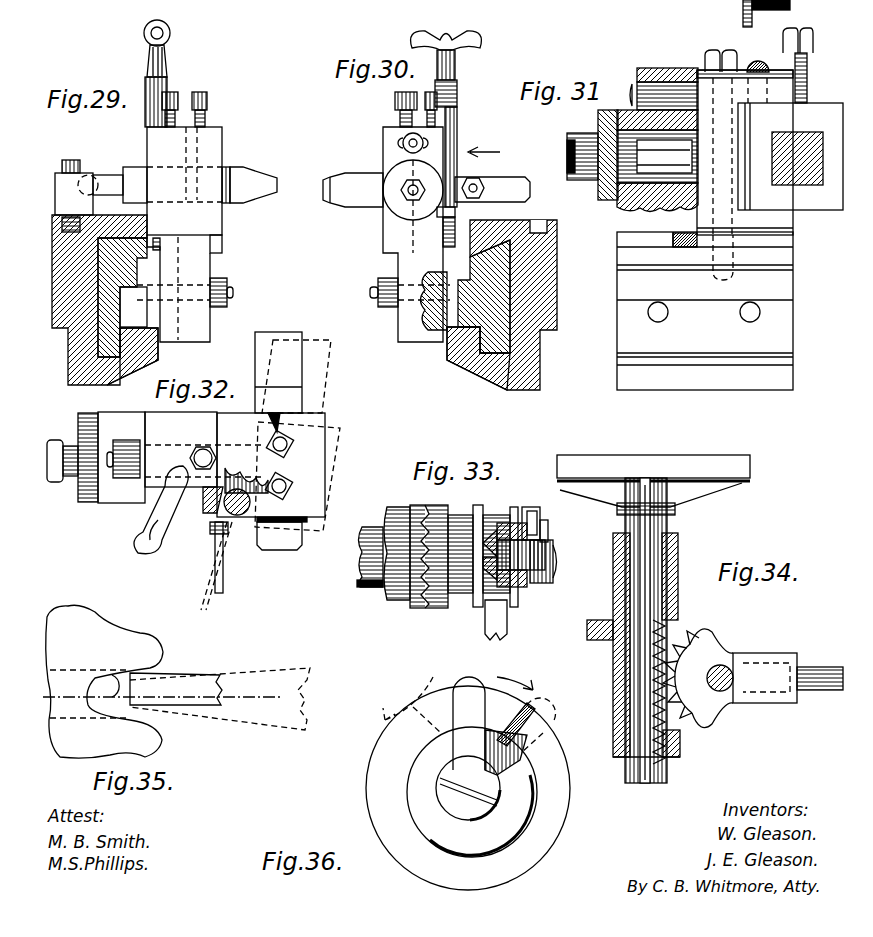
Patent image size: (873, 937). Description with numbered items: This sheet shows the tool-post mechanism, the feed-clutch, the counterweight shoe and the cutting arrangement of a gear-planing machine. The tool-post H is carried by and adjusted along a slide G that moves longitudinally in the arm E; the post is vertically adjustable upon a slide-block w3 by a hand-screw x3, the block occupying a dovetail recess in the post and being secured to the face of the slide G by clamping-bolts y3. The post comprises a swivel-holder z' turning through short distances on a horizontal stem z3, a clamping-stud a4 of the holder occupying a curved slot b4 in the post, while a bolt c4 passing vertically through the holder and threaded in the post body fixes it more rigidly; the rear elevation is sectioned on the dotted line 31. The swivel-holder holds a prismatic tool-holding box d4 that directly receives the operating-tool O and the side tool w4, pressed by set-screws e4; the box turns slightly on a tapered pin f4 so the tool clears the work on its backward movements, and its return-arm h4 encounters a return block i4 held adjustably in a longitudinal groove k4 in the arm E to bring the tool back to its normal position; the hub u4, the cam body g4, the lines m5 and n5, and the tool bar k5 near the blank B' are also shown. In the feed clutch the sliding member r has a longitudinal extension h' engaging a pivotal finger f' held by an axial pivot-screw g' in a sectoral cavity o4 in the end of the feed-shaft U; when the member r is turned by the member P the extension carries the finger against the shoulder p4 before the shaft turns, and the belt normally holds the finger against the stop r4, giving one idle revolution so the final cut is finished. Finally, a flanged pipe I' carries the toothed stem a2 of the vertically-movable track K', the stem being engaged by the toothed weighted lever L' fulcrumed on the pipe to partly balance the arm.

In FIG. 29, the handle x3 is at (167, 62).
In FIG. 30, the handle x3 is at (457, 62).
In FIG. 32, the handle x3 is at (157, 512).
In FIG. 29, the clamp screws e4 is at (207, 103).
In FIG. 31, the clamp screws e4 is at (808, 44).
In FIG. 32, the clamp screws e4 is at (285, 482).
In FIG. 29, the tool-holder body d4 is at (213, 160).
In FIG. 32, the tool-holder body d4 is at (323, 455).
In FIG. 29, the bracket block i4 is at (62, 177).
In FIG. 29, the shaft / bar h4 is at (105, 177).
In FIG. 30, the shaft / bar h4 is at (498, 186).
In FIG. 32, the shaft / bar h4 is at (224, 571).
In FIG. 29, the screw k4 is at (62, 222).
In FIG. 30, the screw k4 is at (537, 228).
In FIG. 29, the cutter / tool O is at (249, 185).
In FIG. 30, the cutter / tool O is at (353, 190).
In FIG. 31, the cutter / tool O is at (808, 170).
In FIG. 32, the cutter / tool O is at (291, 336).
In FIG. 35, the cutter / tool O is at (293, 672).
In FIG. 29, the ledge z' is at (206, 240).
In FIG. 31, the ledge z' is at (756, 229).
In FIG. 32, the ledge z' is at (177, 542).
In FIG. 29, the slide column H is at (178, 288).
In FIG. 30, the slide column H is at (414, 267).
In FIG. 31, the slide column H is at (628, 223).
In FIG. 32, the slide column H is at (165, 444).
In FIG. 29, the adjusting screw y3 is at (233, 292).
In FIG. 30, the adjusting screw y3 is at (371, 292).
In FIG. 29, the slot / openings w3 is at (153, 310).
In FIG. 30, the slot / openings w3 is at (452, 315).
In FIG. 31, the slot / openings w3 is at (665, 318).
In FIG. 29, the frame block E is at (68, 356).
In FIG. 30, the frame block E is at (543, 289).
In FIG. 29, the gib wedge G is at (132, 365).
In FIG. 30, the gib wedge G is at (497, 340).
In FIG. 30, the ring b4 is at (397, 143).
In FIG. 31, the ring b4 is at (687, 93).
In FIG. 30, the plate / hub a4 is at (413, 217).
In FIG. 31, the plate / hub a4 is at (790, 156).
In FIG. 32, the plate / hub a4 is at (112, 447).
In FIG. 30, the section line 31 is at (401, 236).
In FIG. 31, the hub u4 is at (676, 80).
In FIG. 31, the nut c4 is at (715, 52).
In FIG. 32, the nut c4 is at (200, 449).
In FIG. 31, the dome screw f4 is at (758, 62).
In FIG. 32, the dome screw f4 is at (237, 515).
In FIG. 31, the shaft block z3 is at (632, 161).
In FIG. 31, the cam body g4 is at (743, 162).
In FIG. 32, the cam body g4 is at (228, 490).
In FIG. 35, the jaw piece B' is at (104, 678).
In FIG. 35, the line m5 is at (66, 669).
In FIG. 35, the socket w4 is at (118, 678).
In FIG. 35, the line n5 is at (90, 729).
In FIG. 35, the tool bar k5 is at (236, 697).
In FIG. 33, the shaft end U is at (365, 589).
In FIG. 33, the pinion P is at (393, 513).
In FIG. 33, the gear wheel r is at (435, 608).
In FIG. 36, the gear wheel r is at (560, 812).
In FIG. 33, the pin g' is at (528, 562).
In FIG. 36, the pin g' is at (468, 788).
In FIG. 33, the lug h' is at (530, 513).
In FIG. 36, the lug h' is at (523, 722).
In FIG. 33, the arm f' is at (551, 527).
In FIG. 36, the arm f' is at (469, 723).
In FIG. 33, the block o4 is at (540, 586).
In FIG. 36, the block o4 is at (522, 758).
In FIG. 34, the table K' is at (653, 465).
In FIG. 34, the spindle a2 is at (643, 566).
In FIG. 34, the housing I' is at (633, 648).
In FIG. 34, the lever arm L' is at (753, 668).
In FIG. 36, the ring r4 is at (455, 746).
In FIG. 36, the pin p4 is at (510, 777).